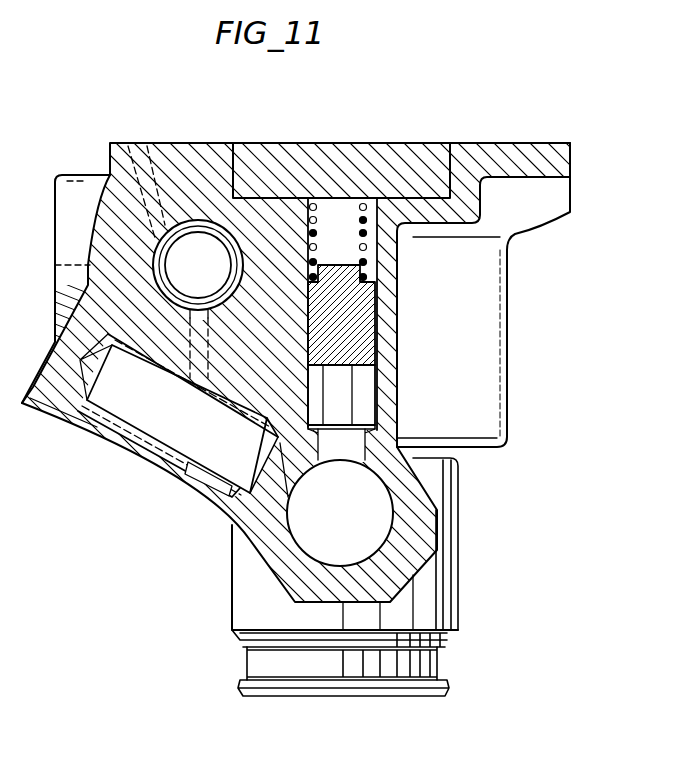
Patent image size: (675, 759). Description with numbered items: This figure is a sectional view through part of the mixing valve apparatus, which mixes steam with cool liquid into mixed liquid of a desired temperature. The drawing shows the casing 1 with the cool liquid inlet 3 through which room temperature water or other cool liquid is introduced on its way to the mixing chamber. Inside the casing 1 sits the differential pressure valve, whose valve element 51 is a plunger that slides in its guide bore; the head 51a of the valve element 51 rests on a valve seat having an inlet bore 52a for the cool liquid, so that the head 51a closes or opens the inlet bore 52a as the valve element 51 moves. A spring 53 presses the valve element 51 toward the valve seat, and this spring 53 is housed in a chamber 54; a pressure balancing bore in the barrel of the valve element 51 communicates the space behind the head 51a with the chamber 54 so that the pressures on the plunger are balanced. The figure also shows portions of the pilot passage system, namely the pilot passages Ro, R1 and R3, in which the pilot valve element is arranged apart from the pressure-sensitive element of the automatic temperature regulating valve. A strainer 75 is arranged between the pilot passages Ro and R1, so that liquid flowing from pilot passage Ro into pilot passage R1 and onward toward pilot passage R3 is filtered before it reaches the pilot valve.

The casing 1 is at (457, 545).
The cool liquid inlet 3 is at (363, 540).
The valve element 51 is at (352, 315).
The head 51a is at (355, 432).
The inlet bore 52a is at (345, 448).
The spring 53 is at (317, 213).
The chamber 54 is at (342, 218).
The strainer 75 is at (187, 457).
The pilot passage R1 is at (203, 337).
The pilot passage R3 is at (152, 190).
The pilot passage Ro is at (252, 492).